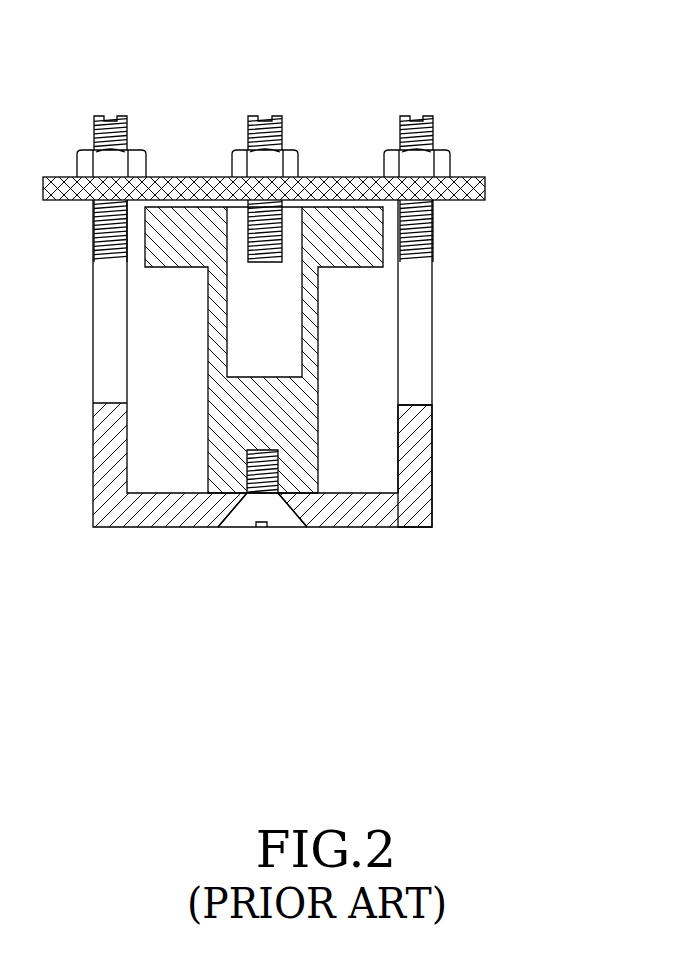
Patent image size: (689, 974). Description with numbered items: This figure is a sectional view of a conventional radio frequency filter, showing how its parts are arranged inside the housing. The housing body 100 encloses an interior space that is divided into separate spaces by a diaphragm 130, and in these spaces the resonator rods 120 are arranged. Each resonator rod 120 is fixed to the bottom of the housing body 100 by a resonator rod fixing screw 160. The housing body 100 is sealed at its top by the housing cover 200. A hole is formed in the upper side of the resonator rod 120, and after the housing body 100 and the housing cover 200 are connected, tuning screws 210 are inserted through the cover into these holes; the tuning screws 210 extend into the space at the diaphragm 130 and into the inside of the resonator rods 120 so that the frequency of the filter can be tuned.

The housing body 100 is at (358, 517).
The resonator rod 120 is at (310, 335).
The diaphragm 130 is at (422, 418).
The resonator rod fixing screw 160 is at (242, 517).
The housing cover 200 is at (468, 178).
The tuning screw 210 is at (412, 118).